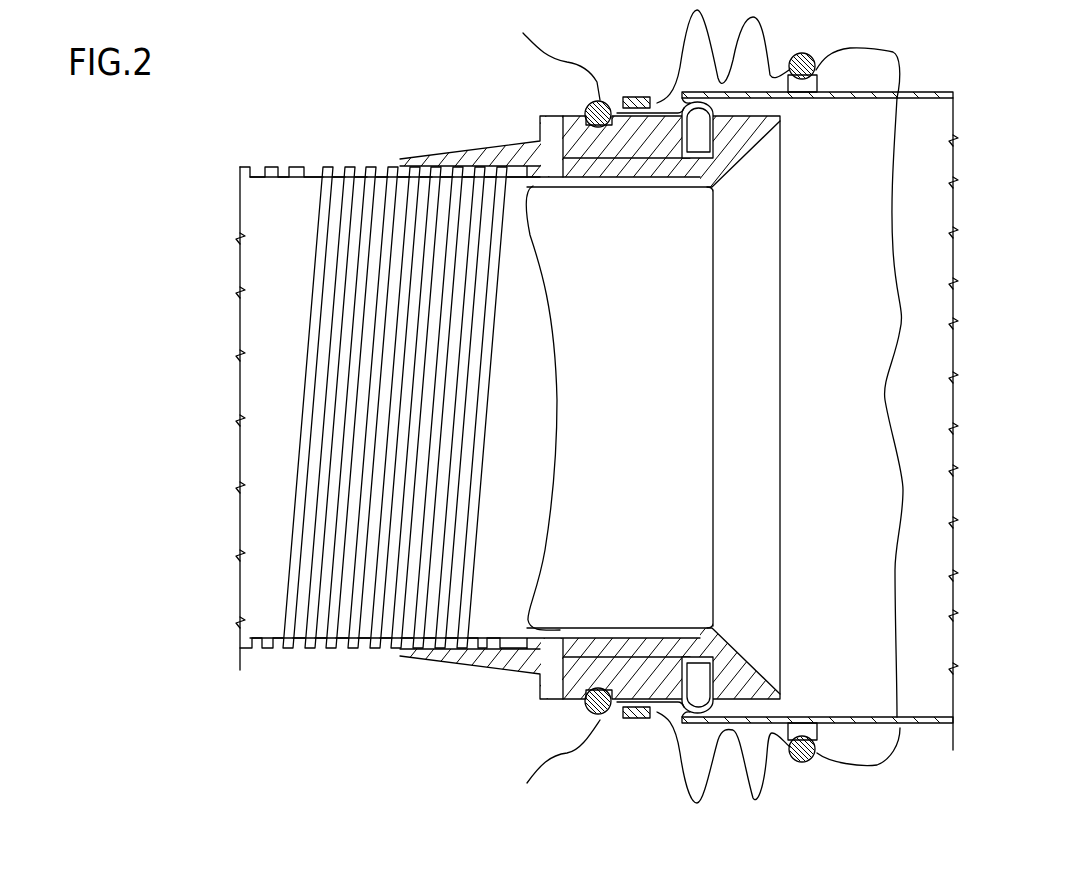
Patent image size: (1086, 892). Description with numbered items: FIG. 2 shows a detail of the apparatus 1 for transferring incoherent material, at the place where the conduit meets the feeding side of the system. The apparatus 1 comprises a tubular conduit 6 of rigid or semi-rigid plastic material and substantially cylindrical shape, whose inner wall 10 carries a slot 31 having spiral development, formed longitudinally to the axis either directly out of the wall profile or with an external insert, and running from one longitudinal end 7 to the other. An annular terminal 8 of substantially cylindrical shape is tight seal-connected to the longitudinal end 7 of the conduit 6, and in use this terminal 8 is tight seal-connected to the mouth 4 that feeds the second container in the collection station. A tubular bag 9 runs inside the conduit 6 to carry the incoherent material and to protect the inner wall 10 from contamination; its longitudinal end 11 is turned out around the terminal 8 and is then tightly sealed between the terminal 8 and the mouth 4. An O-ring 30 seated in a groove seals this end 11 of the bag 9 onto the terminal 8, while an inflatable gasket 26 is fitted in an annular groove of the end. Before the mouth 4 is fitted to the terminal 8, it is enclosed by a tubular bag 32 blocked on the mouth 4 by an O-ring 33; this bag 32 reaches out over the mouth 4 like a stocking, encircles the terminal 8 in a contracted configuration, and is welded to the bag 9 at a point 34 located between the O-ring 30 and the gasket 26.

The apparatus 1 is at (176, 631).
The mouth 4 is at (936, 92).
The tubular conduit 6 is at (287, 165).
The longitudinal end 7 is at (418, 150).
The annular terminal 8 is at (455, 670).
The tubular bag 9 is at (557, 472).
The inner wall 10 is at (271, 190).
The longitudinal end 11 is at (567, 102).
The inflatable gasket 26 is at (680, 100).
The O-ring 30 is at (590, 100).
The slot 31 is at (318, 186).
The tubular bag 32 is at (900, 738).
The O-ring 33 is at (810, 764).
The point 34 is at (645, 722).